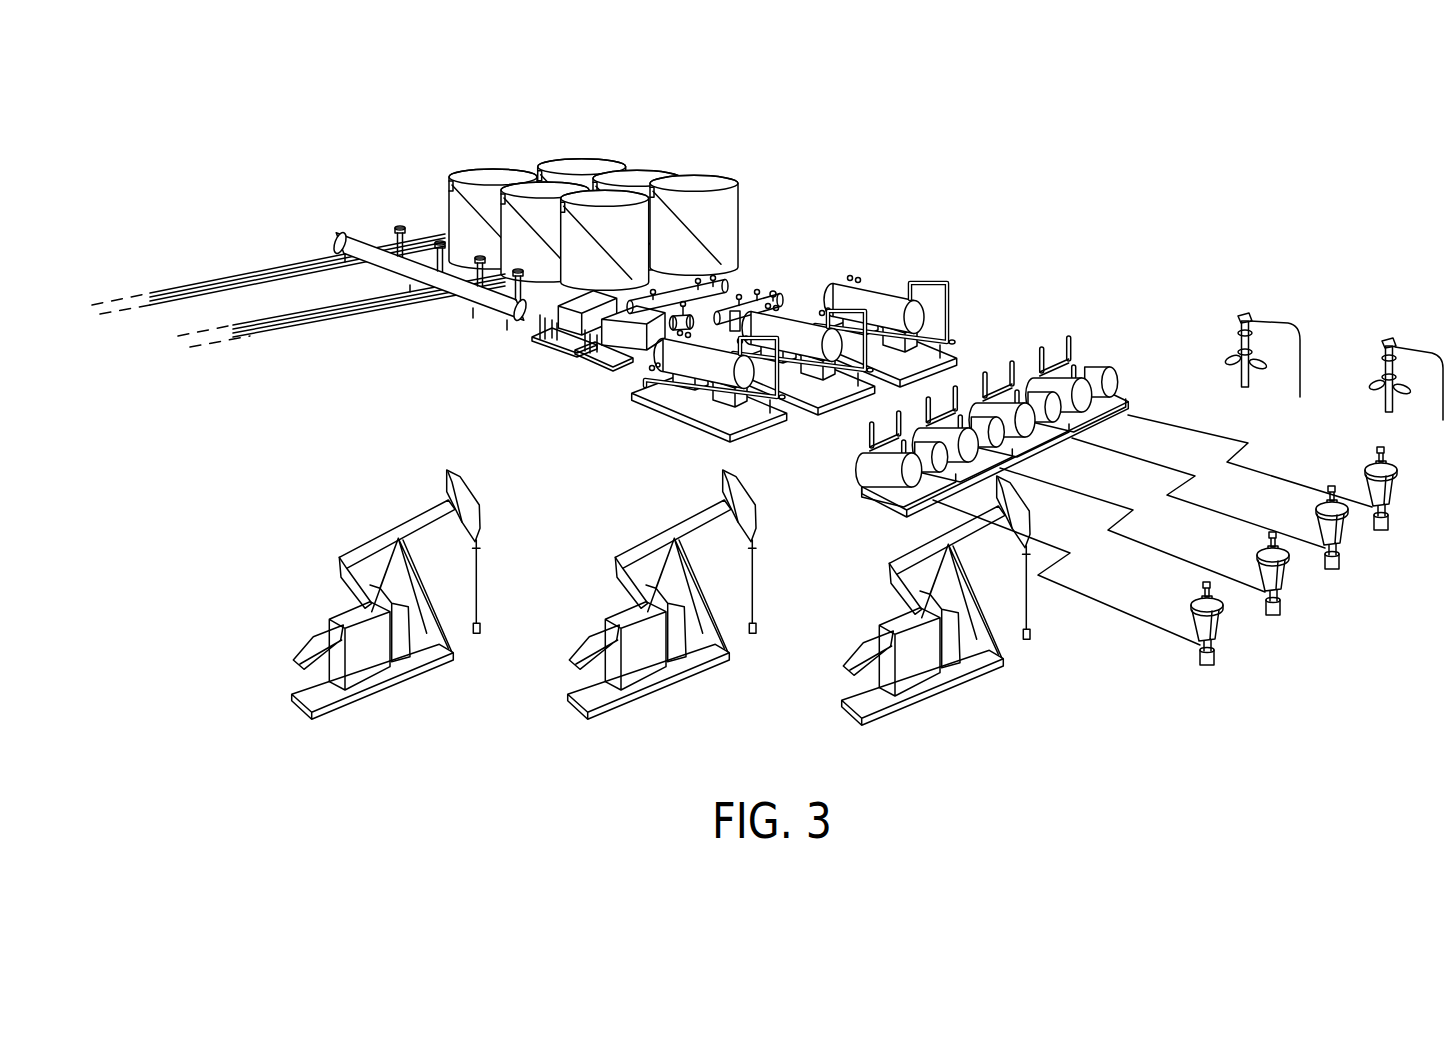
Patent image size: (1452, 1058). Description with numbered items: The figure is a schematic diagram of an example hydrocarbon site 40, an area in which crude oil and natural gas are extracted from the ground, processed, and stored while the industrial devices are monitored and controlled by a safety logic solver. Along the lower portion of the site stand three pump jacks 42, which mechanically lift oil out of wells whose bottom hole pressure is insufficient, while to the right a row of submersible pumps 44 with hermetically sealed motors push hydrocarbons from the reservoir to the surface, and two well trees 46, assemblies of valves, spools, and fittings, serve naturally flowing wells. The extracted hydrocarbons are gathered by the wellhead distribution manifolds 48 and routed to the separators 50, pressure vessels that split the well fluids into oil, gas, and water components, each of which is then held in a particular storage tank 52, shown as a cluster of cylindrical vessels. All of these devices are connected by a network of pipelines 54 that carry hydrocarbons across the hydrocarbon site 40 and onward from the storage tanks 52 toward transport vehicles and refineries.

The hydrocarbon site 40 is at (213, 186).
The pump jacks 42 is at (397, 525).
The submersible pumps 44 is at (1340, 546).
The well trees 46 is at (1236, 331).
The wellhead distribution manifolds 48 is at (860, 486).
The separators 50 is at (585, 360).
The storage tanks 52 is at (585, 157).
The pipelines 54 is at (262, 273).